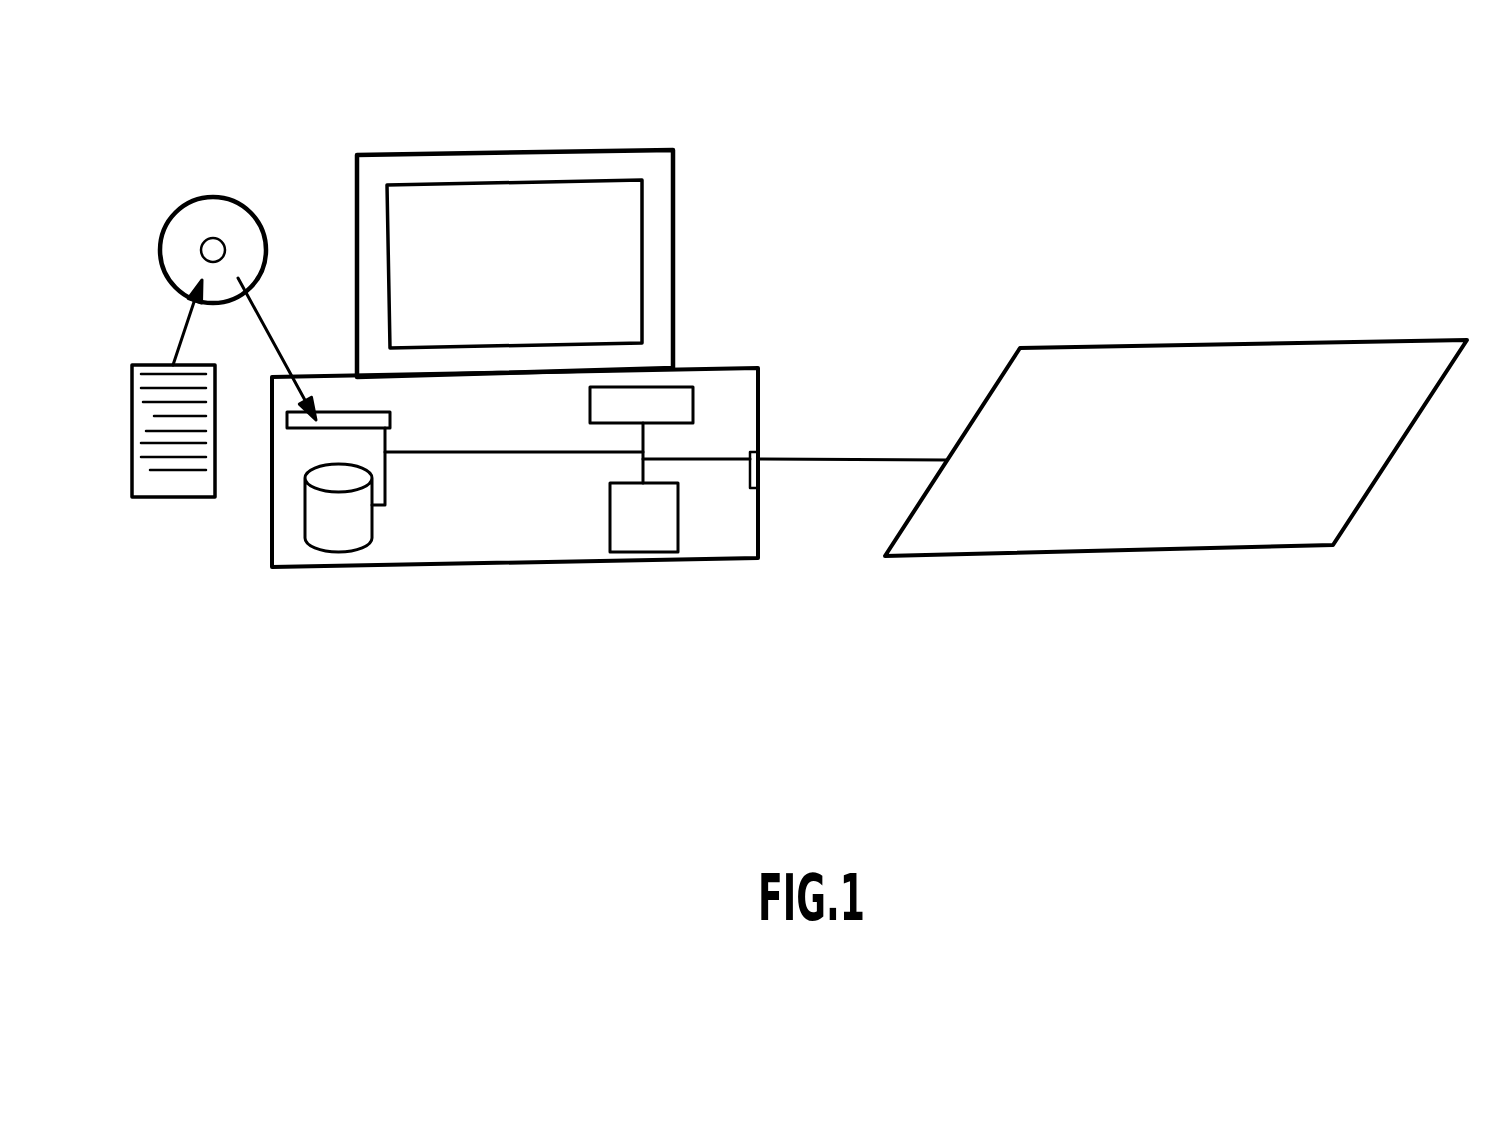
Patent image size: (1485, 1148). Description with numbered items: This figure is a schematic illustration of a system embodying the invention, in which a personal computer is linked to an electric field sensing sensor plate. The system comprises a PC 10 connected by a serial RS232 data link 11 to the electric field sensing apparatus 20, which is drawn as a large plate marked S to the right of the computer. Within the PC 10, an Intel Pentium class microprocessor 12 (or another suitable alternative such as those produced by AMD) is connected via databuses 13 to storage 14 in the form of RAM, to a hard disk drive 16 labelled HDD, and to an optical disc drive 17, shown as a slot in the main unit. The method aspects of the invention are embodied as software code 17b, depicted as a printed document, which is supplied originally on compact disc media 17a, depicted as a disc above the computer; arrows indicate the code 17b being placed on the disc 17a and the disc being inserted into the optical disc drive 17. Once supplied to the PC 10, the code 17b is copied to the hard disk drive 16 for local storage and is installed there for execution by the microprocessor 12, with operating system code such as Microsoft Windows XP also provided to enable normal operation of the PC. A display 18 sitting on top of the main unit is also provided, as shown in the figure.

The PC 10 is at (385, 567).
The serial RS232 data link 11 is at (808, 465).
The microprocessor 12 is at (609, 528).
The databuses 13 is at (490, 455).
The storage 14 is at (693, 413).
The hard disk drive 16 is at (372, 520).
The optical disc drive 17 is at (393, 418).
The compact disc media 17a is at (213, 193).
The software code 17b is at (173, 500).
The display 18 is at (593, 180).
The electric field sensing apparatus 20 is at (1110, 552).